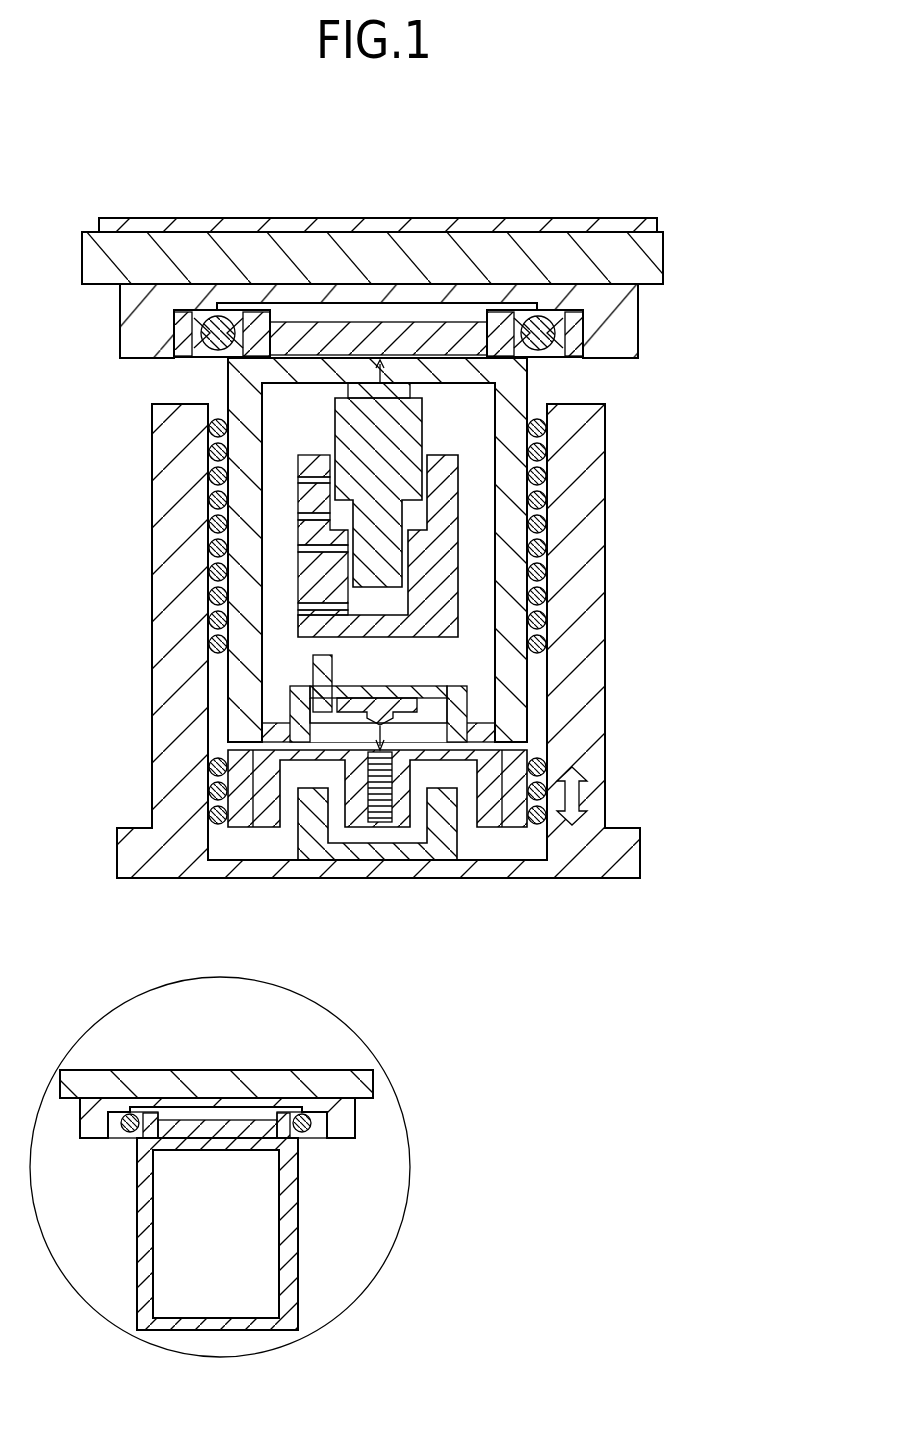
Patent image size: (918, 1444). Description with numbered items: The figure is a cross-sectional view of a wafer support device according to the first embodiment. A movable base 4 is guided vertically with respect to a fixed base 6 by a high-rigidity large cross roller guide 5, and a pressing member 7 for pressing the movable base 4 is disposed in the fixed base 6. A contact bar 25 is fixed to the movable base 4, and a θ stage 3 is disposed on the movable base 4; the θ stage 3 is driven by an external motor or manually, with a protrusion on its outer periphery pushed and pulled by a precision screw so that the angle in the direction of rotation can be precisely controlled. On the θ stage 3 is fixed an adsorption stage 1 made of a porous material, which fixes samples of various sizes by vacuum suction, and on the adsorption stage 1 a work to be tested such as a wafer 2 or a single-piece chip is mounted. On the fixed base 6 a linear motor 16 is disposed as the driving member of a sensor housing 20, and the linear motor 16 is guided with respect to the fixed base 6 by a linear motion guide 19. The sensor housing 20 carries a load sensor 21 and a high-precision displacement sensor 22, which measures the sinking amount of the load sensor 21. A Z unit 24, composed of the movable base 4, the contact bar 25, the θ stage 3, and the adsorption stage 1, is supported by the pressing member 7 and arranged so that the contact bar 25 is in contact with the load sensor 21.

The adsorption stage 1 is at (665, 255).
The wafer 2 is at (665, 221).
The θ stage 3 is at (130, 330).
The movable base 4 is at (240, 390).
The large cross roller guide 5 is at (540, 660).
The fixed base 6 is at (160, 462).
The pressing member 7 is at (300, 580).
The linear motor 16 is at (300, 815).
The linear motion guide 19 is at (540, 815).
The sensor housing 20 is at (455, 700).
The load sensor 21 is at (395, 700).
The high-precision displacement sensor 22 is at (333, 672).
The Z unit 24 is at (110, 1010).
The contact bar 25 is at (490, 740).